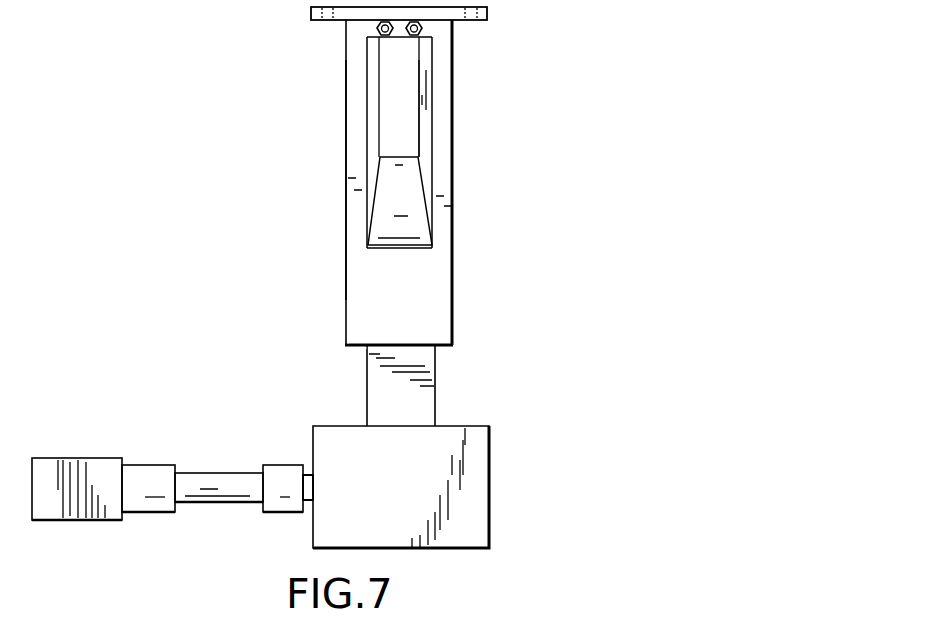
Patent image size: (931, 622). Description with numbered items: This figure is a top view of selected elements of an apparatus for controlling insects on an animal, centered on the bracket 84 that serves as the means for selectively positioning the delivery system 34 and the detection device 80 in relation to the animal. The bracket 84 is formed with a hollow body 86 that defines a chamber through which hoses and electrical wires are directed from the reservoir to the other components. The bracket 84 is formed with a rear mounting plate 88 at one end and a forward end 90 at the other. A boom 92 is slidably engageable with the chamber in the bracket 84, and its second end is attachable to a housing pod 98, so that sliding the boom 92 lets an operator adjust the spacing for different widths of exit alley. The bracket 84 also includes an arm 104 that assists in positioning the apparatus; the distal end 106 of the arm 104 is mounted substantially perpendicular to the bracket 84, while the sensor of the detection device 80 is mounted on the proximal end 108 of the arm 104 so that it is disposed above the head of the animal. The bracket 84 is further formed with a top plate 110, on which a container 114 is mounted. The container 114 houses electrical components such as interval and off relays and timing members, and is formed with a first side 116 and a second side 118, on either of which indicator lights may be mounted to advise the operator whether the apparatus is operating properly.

The delivery system 34 is at (148, 163).
The detection device 80 is at (101, 458).
The bracket 84 is at (453, 238).
The hollow body 86 is at (346, 131).
The rear mounting plate 88 is at (475, 20).
The forward end 90 is at (358, 348).
The boom 92 is at (436, 400).
The housing pod 98 is at (489, 503).
The arm 104 is at (220, 473).
The distal end 106 is at (308, 474).
The proximal end 108 is at (122, 515).
The top plate 110 is at (432, 307).
The container 114 is at (433, 150).
The first side 116 is at (425, 80).
The second side 118 is at (372, 80).